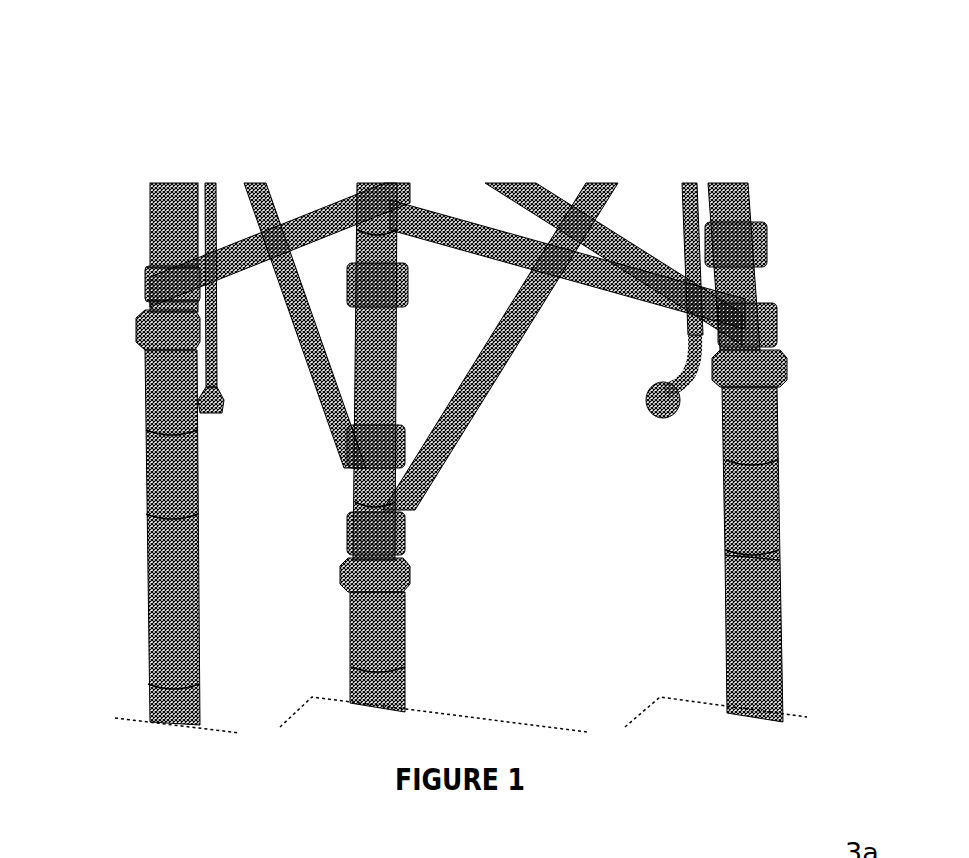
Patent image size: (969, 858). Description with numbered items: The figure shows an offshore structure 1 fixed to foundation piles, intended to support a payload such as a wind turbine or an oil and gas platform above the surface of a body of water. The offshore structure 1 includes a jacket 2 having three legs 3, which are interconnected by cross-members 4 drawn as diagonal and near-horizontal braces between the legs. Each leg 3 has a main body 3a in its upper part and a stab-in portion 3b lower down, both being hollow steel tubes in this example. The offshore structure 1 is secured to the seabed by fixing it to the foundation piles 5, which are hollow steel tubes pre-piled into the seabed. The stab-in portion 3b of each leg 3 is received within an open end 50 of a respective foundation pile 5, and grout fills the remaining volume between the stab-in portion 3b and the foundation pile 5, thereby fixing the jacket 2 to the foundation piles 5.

The offshore structure 1 is at (745, 120).
The jacket 2 is at (233, 163).
The leg 3 is at (793, 235).
The main body 3a is at (763, 277).
The stab-in portion 3b is at (760, 480).
The cross-members 4 is at (630, 292).
The foundation pile 5 is at (150, 638).
The open end 50 is at (777, 378).